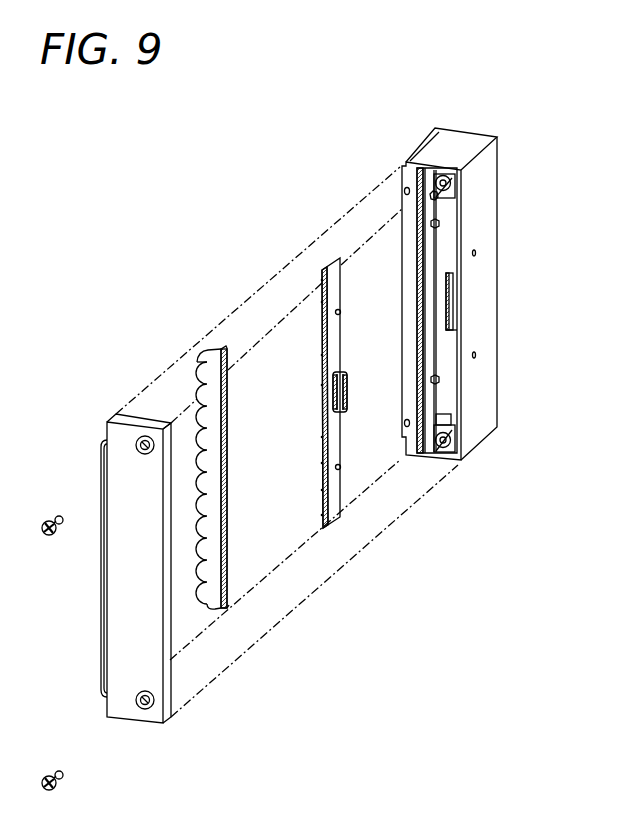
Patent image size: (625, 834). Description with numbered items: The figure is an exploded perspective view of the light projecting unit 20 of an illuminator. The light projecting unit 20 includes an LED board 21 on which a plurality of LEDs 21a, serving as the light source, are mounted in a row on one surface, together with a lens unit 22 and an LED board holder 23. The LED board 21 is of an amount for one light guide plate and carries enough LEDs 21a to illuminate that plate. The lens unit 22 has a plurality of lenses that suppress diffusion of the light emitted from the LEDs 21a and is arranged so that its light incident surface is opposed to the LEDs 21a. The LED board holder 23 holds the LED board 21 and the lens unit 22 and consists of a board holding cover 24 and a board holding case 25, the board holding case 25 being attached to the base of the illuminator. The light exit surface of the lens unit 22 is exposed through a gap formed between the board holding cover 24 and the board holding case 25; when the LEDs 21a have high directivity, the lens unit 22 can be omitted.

The light projecting unit 20 is at (110, 216).
The LED board 21 is at (322, 270).
The LED 21a is at (322, 335).
The lens unit 22 is at (203, 352).
The LED board holder 23 is at (342, 425).
The board holding cover 24 is at (148, 672).
The board holding case 25 is at (480, 438).